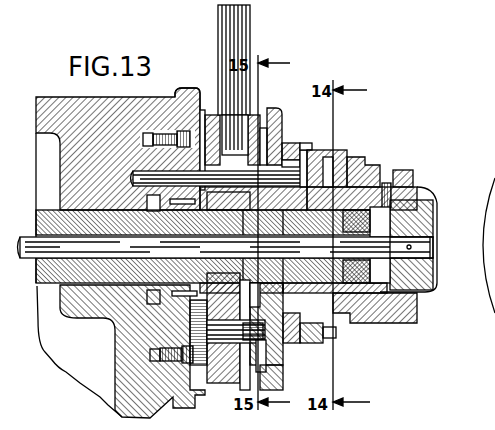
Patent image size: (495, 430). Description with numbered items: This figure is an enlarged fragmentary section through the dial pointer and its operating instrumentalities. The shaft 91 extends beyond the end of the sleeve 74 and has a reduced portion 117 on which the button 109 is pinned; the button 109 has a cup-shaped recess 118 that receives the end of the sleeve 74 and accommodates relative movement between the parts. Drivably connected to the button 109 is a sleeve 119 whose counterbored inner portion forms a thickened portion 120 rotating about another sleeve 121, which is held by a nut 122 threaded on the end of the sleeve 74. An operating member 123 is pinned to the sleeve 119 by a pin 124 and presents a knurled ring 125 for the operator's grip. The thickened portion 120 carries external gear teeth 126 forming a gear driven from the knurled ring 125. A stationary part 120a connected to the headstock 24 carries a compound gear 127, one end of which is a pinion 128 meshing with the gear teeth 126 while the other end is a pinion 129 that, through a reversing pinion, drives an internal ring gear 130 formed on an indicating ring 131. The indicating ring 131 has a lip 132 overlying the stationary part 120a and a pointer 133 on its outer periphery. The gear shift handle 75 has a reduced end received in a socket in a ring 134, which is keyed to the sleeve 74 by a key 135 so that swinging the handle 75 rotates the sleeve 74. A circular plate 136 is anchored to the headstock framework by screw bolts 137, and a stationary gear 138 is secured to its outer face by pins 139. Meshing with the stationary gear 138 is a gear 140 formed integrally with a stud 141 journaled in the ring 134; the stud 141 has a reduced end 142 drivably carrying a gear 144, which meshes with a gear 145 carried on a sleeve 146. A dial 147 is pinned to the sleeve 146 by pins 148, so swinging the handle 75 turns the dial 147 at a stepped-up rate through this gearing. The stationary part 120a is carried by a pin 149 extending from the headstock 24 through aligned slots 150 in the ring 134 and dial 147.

The headstock 24 is at (155, 411).
The sleeve 74 is at (82, 212).
The gear shift handle 75 is at (248, 38).
The shaft 91 is at (112, 246).
The button 109 is at (420, 293).
The reduced portion 117 is at (388, 270).
The cup-shaped recess 118 is at (386, 223).
The sleeve 119 is at (418, 200).
The thickened portion 120 is at (306, 244).
The stationary part 120a is at (333, 150).
The sleeve 121 is at (268, 222).
The nut 122 is at (370, 303).
The operating member 123 is at (350, 165).
The pin 124 is at (384, 183).
The knurled ring 125 is at (413, 171).
The external gear teeth 126 is at (335, 180).
The compound gear 127 is at (318, 344).
The pinion 128 is at (336, 338).
The pinion 129 is at (298, 344).
The internal ring gear 130 is at (303, 150).
The indicating ring 131 is at (283, 378).
The lip 132 is at (300, 150).
The pointer 133 is at (288, 143).
The ring 134 is at (208, 290).
The key 135 is at (232, 236).
The circular plate 136 is at (197, 77).
The screw bolts 137 is at (160, 132).
The stationary gear 138 is at (198, 291).
The pins 139 is at (193, 204).
The gear 140 is at (193, 334).
The stud 141 is at (236, 332).
The reduced end 142 is at (247, 350).
The gear 144 is at (245, 368).
The gear 145 is at (246, 199).
The sleeve 146 is at (273, 272).
The dial 147 is at (272, 108).
The pins 148 is at (258, 177).
The pin 149 is at (150, 170).
The slots 150 is at (210, 178).